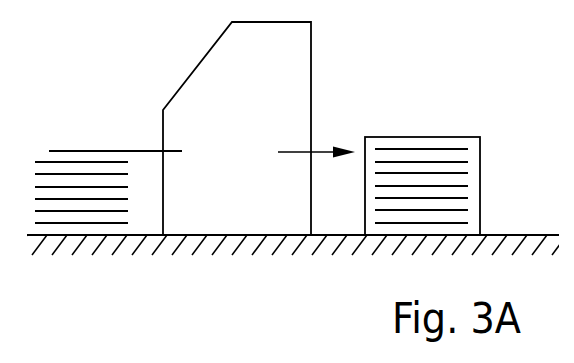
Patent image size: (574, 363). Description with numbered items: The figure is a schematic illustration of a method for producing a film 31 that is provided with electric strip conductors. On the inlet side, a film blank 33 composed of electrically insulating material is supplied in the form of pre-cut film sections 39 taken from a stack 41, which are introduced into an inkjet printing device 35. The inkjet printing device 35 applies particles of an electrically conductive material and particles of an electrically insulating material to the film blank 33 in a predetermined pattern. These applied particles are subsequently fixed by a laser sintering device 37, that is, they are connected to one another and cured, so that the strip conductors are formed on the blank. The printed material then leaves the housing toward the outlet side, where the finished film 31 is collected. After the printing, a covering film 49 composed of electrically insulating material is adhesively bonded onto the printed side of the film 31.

The film 31 is at (439, 146).
The film blank 33 is at (108, 140).
The inkjet printing device 35 is at (268, 77).
The laser sintering device 37 is at (254, 218).
The pre-cut film sections 39 is at (274, 146).
The stack 41 is at (463, 137).
The covering film 49 is at (99, 150).